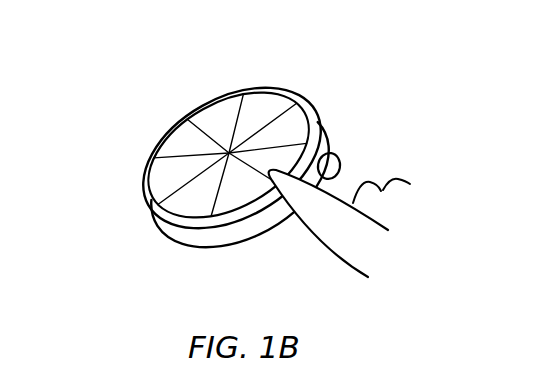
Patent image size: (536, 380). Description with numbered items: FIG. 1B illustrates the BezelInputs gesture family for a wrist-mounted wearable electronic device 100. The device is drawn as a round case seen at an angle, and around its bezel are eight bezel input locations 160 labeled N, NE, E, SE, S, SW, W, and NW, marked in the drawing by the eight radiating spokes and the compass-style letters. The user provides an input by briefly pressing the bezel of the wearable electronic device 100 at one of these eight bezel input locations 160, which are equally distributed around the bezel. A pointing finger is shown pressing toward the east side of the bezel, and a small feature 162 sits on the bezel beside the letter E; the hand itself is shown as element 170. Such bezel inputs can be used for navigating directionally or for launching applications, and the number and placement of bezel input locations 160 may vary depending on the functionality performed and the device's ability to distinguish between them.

The wearable electronic device 100 is at (248, 151).
The bezel input locations 160 is at (314, 111).
The button on bezel (not labeled in this view) 162 is at (329, 165).
The user's pointing hand (not labeled in this view) 170 is at (339, 223).